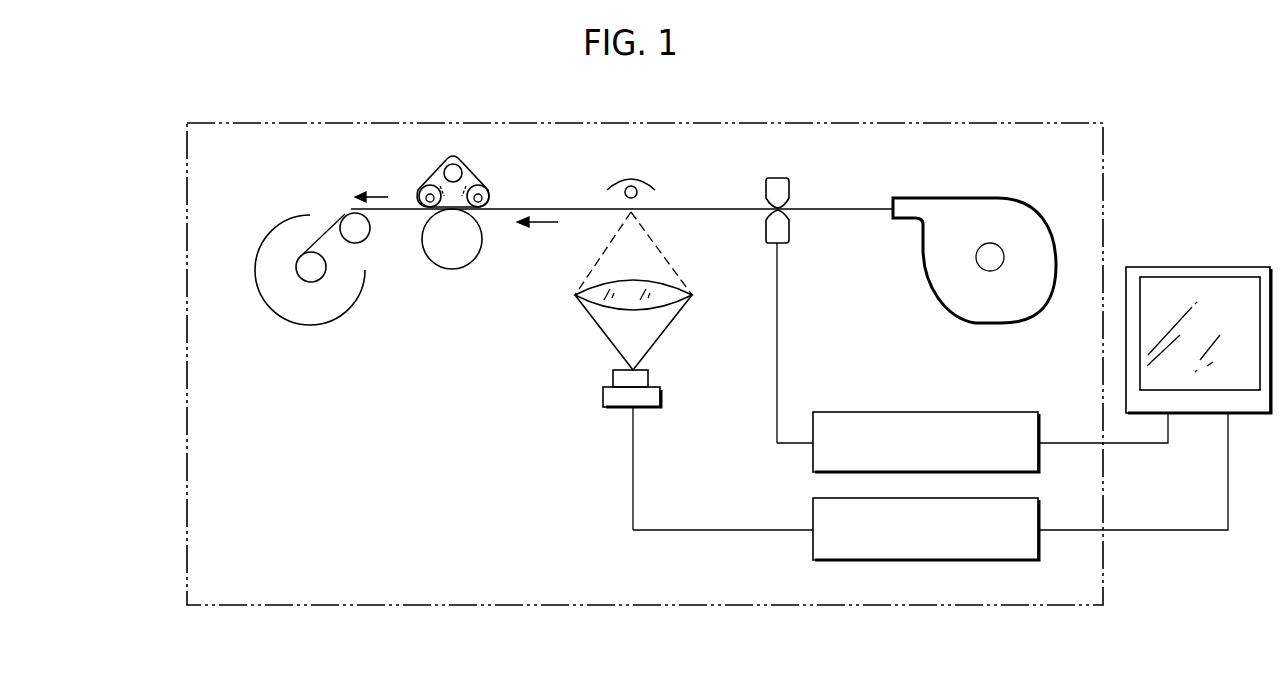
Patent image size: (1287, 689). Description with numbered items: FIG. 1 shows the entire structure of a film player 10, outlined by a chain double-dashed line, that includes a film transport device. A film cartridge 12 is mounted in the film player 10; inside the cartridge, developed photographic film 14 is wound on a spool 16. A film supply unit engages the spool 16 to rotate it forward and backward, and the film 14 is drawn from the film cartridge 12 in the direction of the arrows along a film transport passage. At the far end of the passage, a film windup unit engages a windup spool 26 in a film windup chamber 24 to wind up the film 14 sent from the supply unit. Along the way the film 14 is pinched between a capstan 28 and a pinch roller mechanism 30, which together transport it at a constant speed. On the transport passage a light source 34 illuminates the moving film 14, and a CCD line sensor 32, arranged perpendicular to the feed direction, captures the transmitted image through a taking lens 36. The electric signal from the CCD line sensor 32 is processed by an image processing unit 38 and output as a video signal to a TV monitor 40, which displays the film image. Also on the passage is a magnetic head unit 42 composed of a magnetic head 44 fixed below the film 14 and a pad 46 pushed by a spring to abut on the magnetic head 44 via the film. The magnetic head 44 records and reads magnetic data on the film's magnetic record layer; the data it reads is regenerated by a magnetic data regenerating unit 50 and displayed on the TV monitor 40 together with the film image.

The film player 10 is at (688, 610).
The film cartridge 12 is at (965, 198).
The photographic film 14 is at (843, 207).
The spool 16 is at (980, 266).
The film windup chamber 24 is at (354, 295).
The windup spool 26 is at (307, 283).
The capstan 28 is at (455, 247).
The pinch roller mechanism 30 is at (480, 178).
The CCD line sensor 32 is at (660, 397).
The light source 34 is at (633, 180).
The taking lens 36 is at (688, 300).
The image processing unit 38 is at (840, 562).
The TV monitor 40 is at (1165, 267).
The magnetic head unit 42 is at (765, 289).
The magnetic head 44 is at (750, 225).
The pad 46 is at (777, 190).
The magnetic data regenerating unit 50 is at (847, 410).